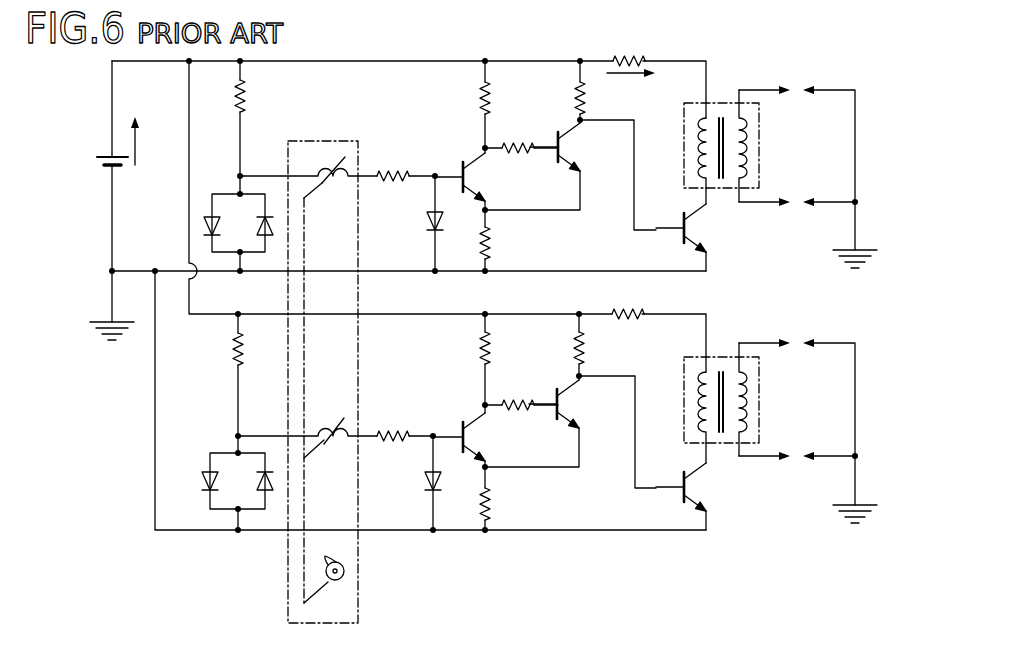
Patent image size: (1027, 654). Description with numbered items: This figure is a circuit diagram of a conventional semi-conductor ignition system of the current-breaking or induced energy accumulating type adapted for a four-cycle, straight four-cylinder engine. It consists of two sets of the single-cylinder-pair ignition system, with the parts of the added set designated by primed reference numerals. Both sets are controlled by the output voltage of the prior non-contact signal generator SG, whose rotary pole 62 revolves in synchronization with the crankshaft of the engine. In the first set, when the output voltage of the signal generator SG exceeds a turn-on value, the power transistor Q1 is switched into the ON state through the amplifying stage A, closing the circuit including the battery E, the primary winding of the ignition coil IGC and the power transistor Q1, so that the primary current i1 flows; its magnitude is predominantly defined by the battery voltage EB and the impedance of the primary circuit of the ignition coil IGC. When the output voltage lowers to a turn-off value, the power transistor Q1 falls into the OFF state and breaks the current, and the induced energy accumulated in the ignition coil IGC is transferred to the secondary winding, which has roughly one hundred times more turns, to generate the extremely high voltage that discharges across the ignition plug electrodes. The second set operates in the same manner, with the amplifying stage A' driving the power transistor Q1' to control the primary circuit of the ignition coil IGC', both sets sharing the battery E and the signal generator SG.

The rotary pole 62 is at (344, 570).
The non-contact signal generator SG is at (288, 588).
The battery E is at (108, 174).
The battery voltage EB is at (147, 141).
The amplifying stage A is at (510, 166).
The amplifying stage A' is at (509, 422).
The power transistor Q1 is at (695, 229).
The power transistor Q1' is at (695, 486).
The ignition coil IGC is at (780, 167).
The ignition coil IGC' is at (780, 419).
The primary current i1 is at (632, 80).